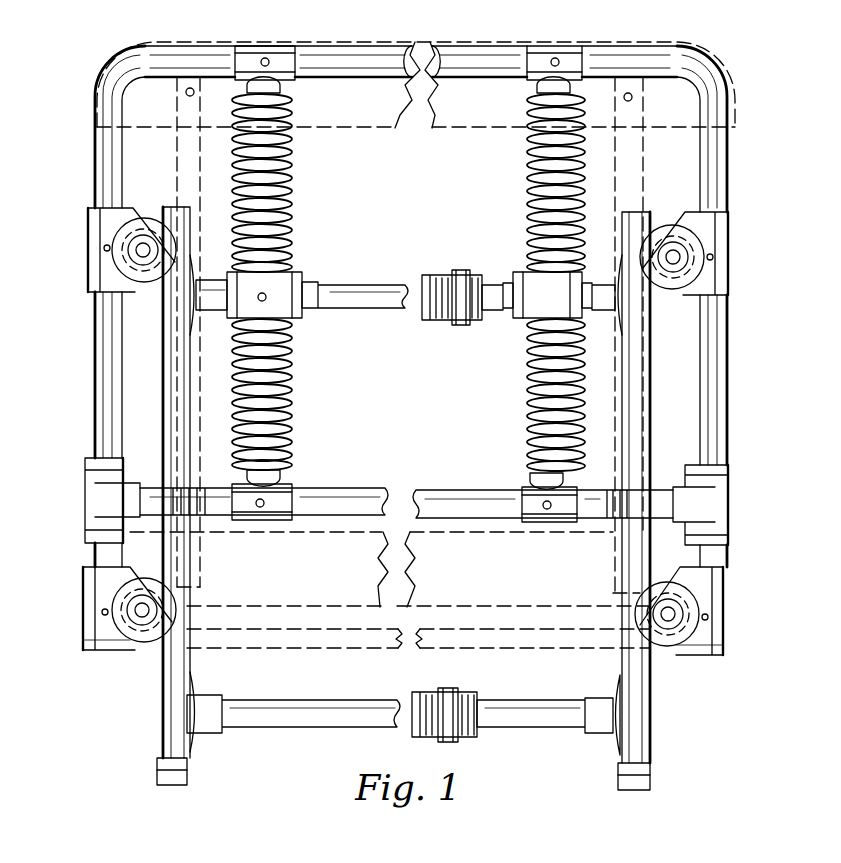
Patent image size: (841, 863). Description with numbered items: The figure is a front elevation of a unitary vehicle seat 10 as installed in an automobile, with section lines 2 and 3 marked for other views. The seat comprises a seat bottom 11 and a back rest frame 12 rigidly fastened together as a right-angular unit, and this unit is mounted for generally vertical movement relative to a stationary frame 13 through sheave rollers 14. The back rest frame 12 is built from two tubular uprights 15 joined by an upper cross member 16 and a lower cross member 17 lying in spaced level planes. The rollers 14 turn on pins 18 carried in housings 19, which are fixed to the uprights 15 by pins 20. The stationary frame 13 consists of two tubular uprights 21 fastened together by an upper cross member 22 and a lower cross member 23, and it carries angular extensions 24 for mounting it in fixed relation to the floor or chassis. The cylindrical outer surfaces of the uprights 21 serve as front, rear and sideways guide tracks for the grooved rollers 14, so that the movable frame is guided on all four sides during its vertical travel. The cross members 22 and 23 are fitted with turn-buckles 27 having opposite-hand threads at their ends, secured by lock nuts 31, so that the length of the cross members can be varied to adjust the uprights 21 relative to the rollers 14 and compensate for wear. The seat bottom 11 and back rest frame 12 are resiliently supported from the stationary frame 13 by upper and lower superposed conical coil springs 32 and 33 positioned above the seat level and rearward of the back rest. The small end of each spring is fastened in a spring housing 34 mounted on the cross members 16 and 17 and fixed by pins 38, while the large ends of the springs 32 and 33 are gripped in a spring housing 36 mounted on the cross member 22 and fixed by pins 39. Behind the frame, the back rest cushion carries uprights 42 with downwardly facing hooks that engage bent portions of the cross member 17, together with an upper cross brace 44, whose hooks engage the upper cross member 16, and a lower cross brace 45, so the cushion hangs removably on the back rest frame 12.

The unitary vehicle seat 10 is at (137, 680).
The seat bottom 11 is at (120, 650).
The back rest frame 12 is at (726, 394).
The stationary frame 13 is at (655, 395).
The sheave roller 14 is at (158, 270).
The tubular upright 15 is at (100, 320).
The upper cross member 16 is at (495, 60).
The lower cross member 17 is at (486, 503).
The pin 18 is at (143, 243).
The housing 19 is at (90, 215).
The pin 20 is at (105, 250).
The tubular upright 21 is at (166, 318).
The upper cross member 22 is at (492, 283).
The lower cross member 23 is at (498, 703).
The angular extension 24 is at (160, 786).
The turn-buckle 27 is at (428, 276).
The lock nut 31 is at (460, 320).
The upper conical coil spring 32 is at (290, 197).
The lower conical coil spring 33 is at (292, 374).
The spring housing 34 is at (284, 86).
The spring housing 36 is at (300, 270).
The pin 38 is at (262, 58).
The pin 39 is at (266, 300).
The upright 42 is at (183, 166).
The upper cross brace 44 is at (718, 65).
The lower cross brace 45 is at (305, 522).
The section line 2- 2 is at (763, 477).
The section line 3- 3 is at (605, 820).